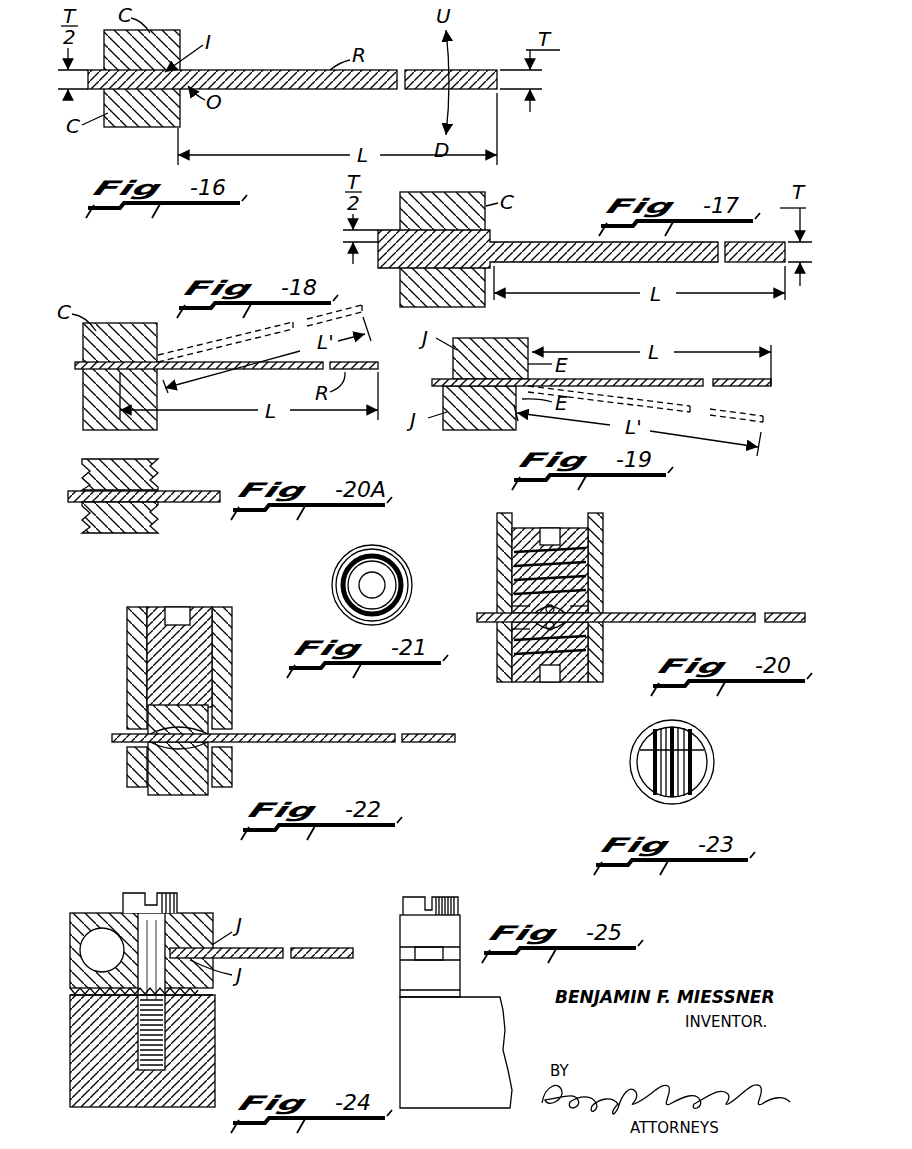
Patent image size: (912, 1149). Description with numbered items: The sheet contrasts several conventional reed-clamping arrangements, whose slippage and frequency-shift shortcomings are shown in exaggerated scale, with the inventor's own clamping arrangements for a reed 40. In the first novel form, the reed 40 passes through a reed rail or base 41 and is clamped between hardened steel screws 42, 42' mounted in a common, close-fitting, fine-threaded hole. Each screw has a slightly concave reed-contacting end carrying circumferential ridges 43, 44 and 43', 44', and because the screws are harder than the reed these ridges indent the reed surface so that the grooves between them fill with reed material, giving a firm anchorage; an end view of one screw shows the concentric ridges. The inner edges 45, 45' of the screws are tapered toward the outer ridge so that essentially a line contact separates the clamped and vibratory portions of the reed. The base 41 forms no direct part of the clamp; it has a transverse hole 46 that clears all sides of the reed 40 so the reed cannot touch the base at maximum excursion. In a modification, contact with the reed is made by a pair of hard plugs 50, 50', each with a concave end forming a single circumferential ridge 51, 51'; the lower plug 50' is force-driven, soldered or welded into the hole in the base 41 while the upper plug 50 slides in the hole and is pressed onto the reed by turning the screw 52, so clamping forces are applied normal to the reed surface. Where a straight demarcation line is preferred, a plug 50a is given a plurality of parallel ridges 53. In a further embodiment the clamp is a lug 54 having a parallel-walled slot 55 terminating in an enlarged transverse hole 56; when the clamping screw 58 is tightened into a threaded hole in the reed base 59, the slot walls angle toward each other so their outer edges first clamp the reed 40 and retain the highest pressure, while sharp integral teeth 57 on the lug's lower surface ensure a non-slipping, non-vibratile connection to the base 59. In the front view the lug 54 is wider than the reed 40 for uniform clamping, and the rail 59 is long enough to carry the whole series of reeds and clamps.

In FIG. 20A, the reed 40 is at (205, 503).
In FIG. 20, the reed 40 is at (705, 613).
In FIG. 22, the reed 40 is at (345, 734).
In FIG. 24, the reed 40 is at (290, 948).
In FIG. 25, the reed 40 is at (430, 955).
In FIG. 20, the reed rail (base) 41 is at (603, 538).
In FIG. 22, the reed rail (base) 41 is at (127, 630).
In FIG. 20A, the hardened steel screw 42 is at (135, 464).
In FIG. 20, the hardened steel screw 42 is at (550, 550).
In FIG. 20A, the hardened steel screw 42' is at (120, 529).
In FIG. 20, the hardened steel screw 42' is at (542, 668).
In FIG. 21, the circumferential ridge 43 is at (343, 585).
In FIG. 20, the circumferential ridge 43 is at (510, 631).
In FIG. 20, the circumferential ridge 43' is at (594, 648).
In FIG. 21, the circumferential ridge 44 is at (387, 561).
In FIG. 20, the circumferential ridge 44 is at (503, 642).
In FIG. 20, the circumferential ridge 44' is at (566, 668).
In FIG. 20A, the inner edge of screw 45 is at (175, 479).
In FIG. 21, the inner edge of screw 45 is at (349, 585).
In FIG. 20, the inner edge of screw 45 is at (490, 593).
In FIG. 20A, the inner edge of screw 45' is at (58, 513).
In FIG. 20, the inner edge of screw 45' is at (582, 637).
In FIG. 20, the transverse hole 46 is at (600, 610).
In FIG. 22, the upper plug 50 is at (141, 710).
In FIG. 22, the lower plug 50' is at (152, 778).
In FIG. 23, the plug 50a is at (712, 776).
In FIG. 22, the circumferential ridge 51 is at (140, 722).
In FIG. 22, the circumferential ridge 51' is at (212, 759).
In FIG. 22, the screw 52 is at (161, 625).
In FIG. 23, the parallel ridges 53 is at (640, 765).
In FIG. 24, the lug 54 is at (72, 915).
In FIG. 25, the lug 54 is at (410, 932).
In FIG. 24, the parallel-walled slot 55 is at (130, 945).
In FIG. 24, the transverse hole 56 is at (100, 950).
In FIG. 24, the integral teeth 57 is at (75, 990).
In FIG. 24, the clamping screw 58 is at (162, 895).
In FIG. 25, the clamping screw 58 is at (448, 897).
In FIG. 24, the reed base (reed rail) 59 is at (205, 1050).
In FIG. 25, the reed base (reed rail) 59 is at (405, 1032).